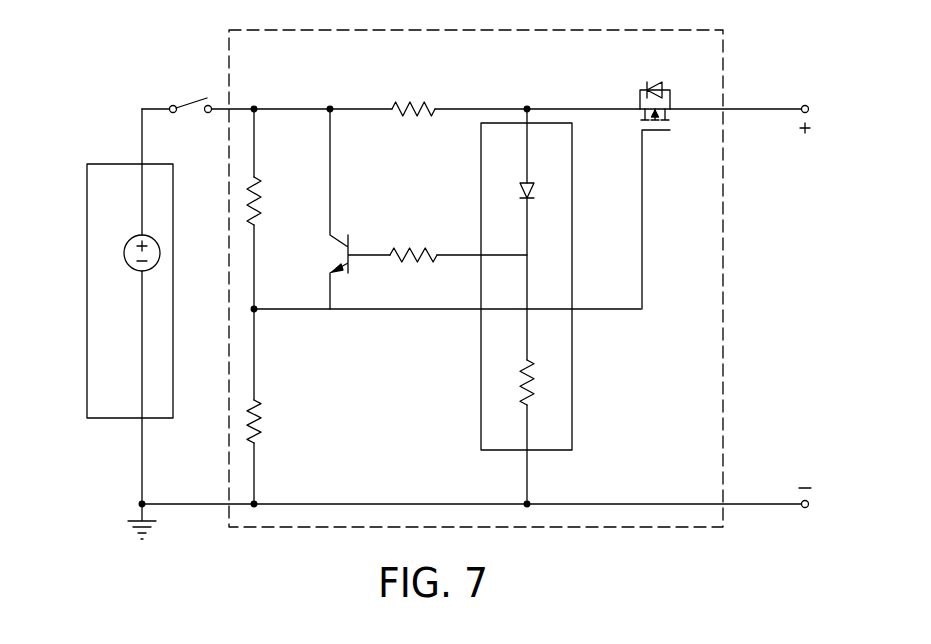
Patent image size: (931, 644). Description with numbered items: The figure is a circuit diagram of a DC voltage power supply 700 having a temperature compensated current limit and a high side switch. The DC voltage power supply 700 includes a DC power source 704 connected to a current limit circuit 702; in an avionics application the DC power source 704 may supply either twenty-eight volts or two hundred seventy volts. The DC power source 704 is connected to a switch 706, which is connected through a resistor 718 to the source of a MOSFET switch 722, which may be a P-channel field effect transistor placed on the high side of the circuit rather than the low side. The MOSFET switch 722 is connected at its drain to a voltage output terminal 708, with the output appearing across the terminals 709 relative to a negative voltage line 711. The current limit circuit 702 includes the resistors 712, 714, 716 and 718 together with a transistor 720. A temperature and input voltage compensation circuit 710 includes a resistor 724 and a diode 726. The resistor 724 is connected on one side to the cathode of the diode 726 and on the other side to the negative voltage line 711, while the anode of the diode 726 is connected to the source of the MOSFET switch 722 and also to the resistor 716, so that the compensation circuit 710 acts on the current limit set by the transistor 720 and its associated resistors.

The DC voltage power supply 700 is at (111, 126).
The current limit circuit 702 is at (724, 366).
The DC power source 704 is at (87, 232).
The switch 706 is at (196, 97).
The voltage output terminal 708 is at (305, 108).
The output terminal 709 is at (805, 105).
The temperature and input voltage compensation circuit 710 is at (481, 163).
The negative voltage line 711 is at (395, 503).
The resistor 712 is at (262, 180).
The resistor 714 is at (262, 402).
The resistor 716 is at (413, 263).
The resistor 718 is at (436, 104).
The transistor 720 is at (338, 242).
The MOSFET switch 722 is at (640, 97).
The resistor 724 is at (537, 367).
The diode 726 is at (537, 192).